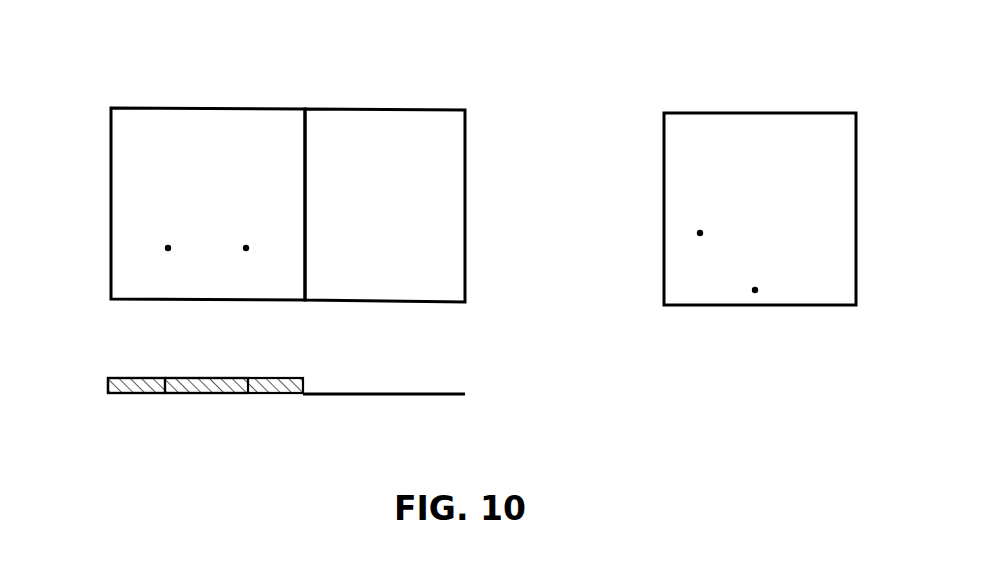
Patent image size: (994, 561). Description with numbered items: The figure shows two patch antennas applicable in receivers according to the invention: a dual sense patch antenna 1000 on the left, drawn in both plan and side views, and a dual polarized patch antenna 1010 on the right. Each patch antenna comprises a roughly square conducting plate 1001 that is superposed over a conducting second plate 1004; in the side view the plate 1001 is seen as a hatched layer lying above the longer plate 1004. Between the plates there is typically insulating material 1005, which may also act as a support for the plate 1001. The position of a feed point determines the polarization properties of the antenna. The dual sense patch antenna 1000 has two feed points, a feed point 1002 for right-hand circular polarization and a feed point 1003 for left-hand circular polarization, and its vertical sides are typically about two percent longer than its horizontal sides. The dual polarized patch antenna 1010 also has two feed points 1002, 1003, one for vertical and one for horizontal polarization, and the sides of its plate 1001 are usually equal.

The dual sense patch antenna 1000 is at (496, 121).
The conducting plate 1001 is at (250, 107).
The feed point 1002 is at (168, 248).
The feed point 1003 is at (246, 248).
The conducting second plate 1004 is at (398, 107).
The insulating material 1005 is at (108, 379).
The dual polarized patch antenna 1010 is at (630, 207).